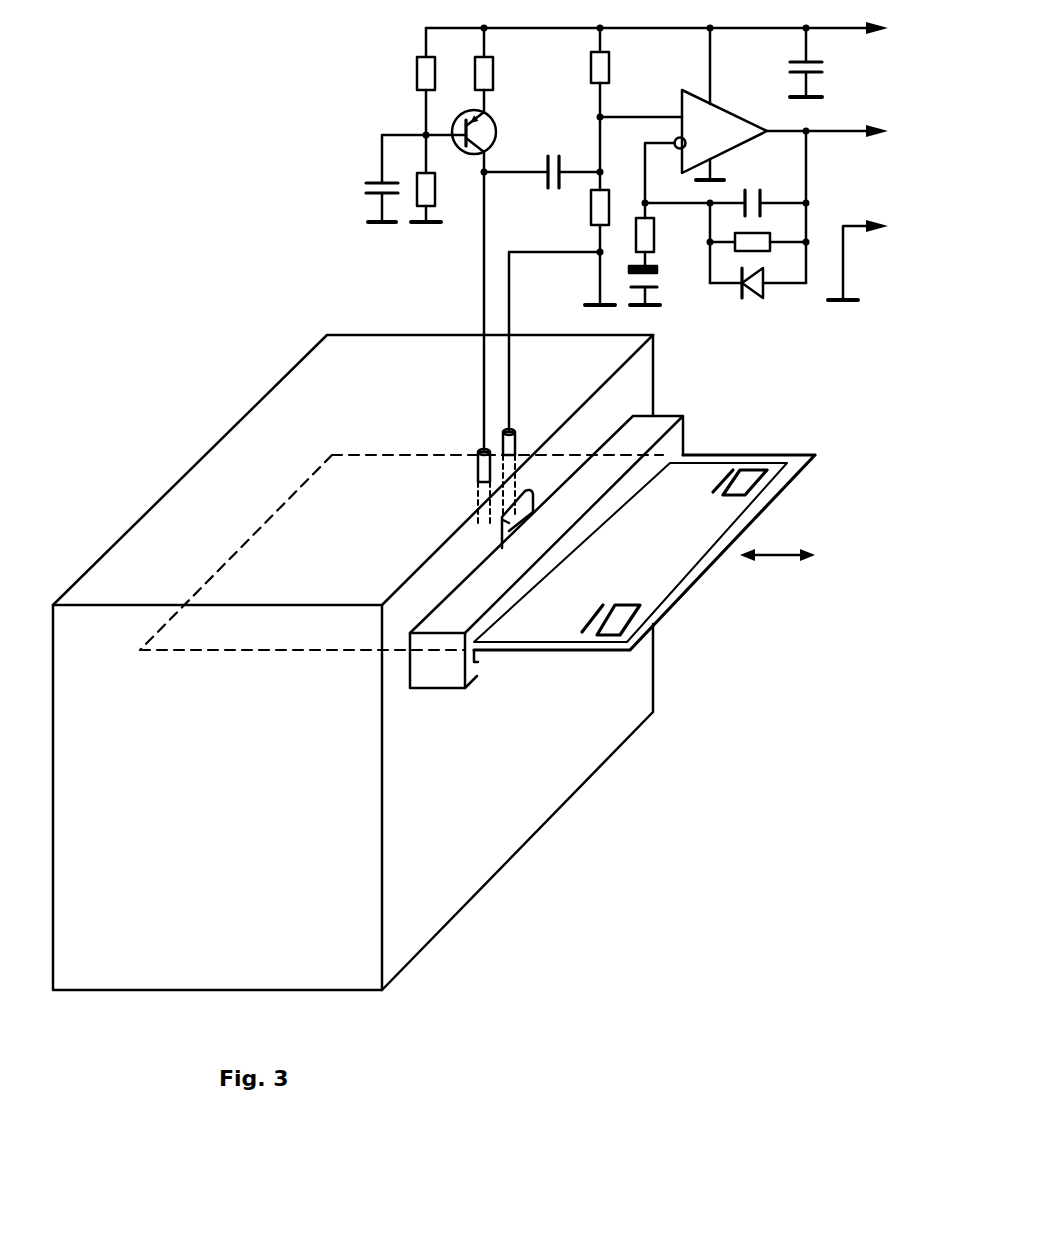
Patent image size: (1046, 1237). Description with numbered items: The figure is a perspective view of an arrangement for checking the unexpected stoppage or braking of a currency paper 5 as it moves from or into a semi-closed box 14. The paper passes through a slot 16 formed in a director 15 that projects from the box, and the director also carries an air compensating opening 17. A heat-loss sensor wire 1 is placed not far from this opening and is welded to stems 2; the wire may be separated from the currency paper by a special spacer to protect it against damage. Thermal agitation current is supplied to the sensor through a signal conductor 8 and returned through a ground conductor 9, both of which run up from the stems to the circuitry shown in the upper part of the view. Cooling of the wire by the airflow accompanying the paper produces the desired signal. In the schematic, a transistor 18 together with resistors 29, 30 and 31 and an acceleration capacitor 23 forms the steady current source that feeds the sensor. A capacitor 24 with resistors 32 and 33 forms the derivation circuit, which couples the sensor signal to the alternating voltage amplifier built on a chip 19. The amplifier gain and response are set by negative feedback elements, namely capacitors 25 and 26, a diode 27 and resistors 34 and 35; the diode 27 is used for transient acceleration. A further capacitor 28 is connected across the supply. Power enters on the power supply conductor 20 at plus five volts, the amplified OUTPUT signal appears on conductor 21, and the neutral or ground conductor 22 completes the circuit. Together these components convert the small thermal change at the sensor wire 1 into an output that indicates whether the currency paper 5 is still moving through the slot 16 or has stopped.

The sensor wire 1 is at (524, 491).
The stems 2 is at (479, 452).
The currency paper 5 is at (657, 597).
The signal conductor 8 is at (483, 357).
The ground conductor 9 is at (511, 348).
The box 14 is at (507, 835).
The director 15 is at (453, 678).
The slot 16 is at (482, 658).
The air compensating opening 17 is at (509, 523).
The transistor 18 is at (497, 131).
The chip 19 is at (748, 140).
The power supply 20 is at (836, 29).
The conductor 21 is at (845, 130).
The neutral conductor 22 is at (862, 224).
The acceleration capacitor 23 is at (368, 181).
The capacitor 24 is at (548, 178).
The capacitor 25 is at (656, 288).
The capacitor 26 is at (763, 195).
The diode 27 is at (763, 297).
The capacitor 28 is at (790, 69).
The resistor 29 is at (436, 192).
The resistor 30 is at (436, 76).
The resistor 31 is at (493, 75).
The resistor 32 is at (611, 68).
The resistor 33 is at (610, 205).
The resistor 34 is at (654, 239).
The resistor 35 is at (771, 233).